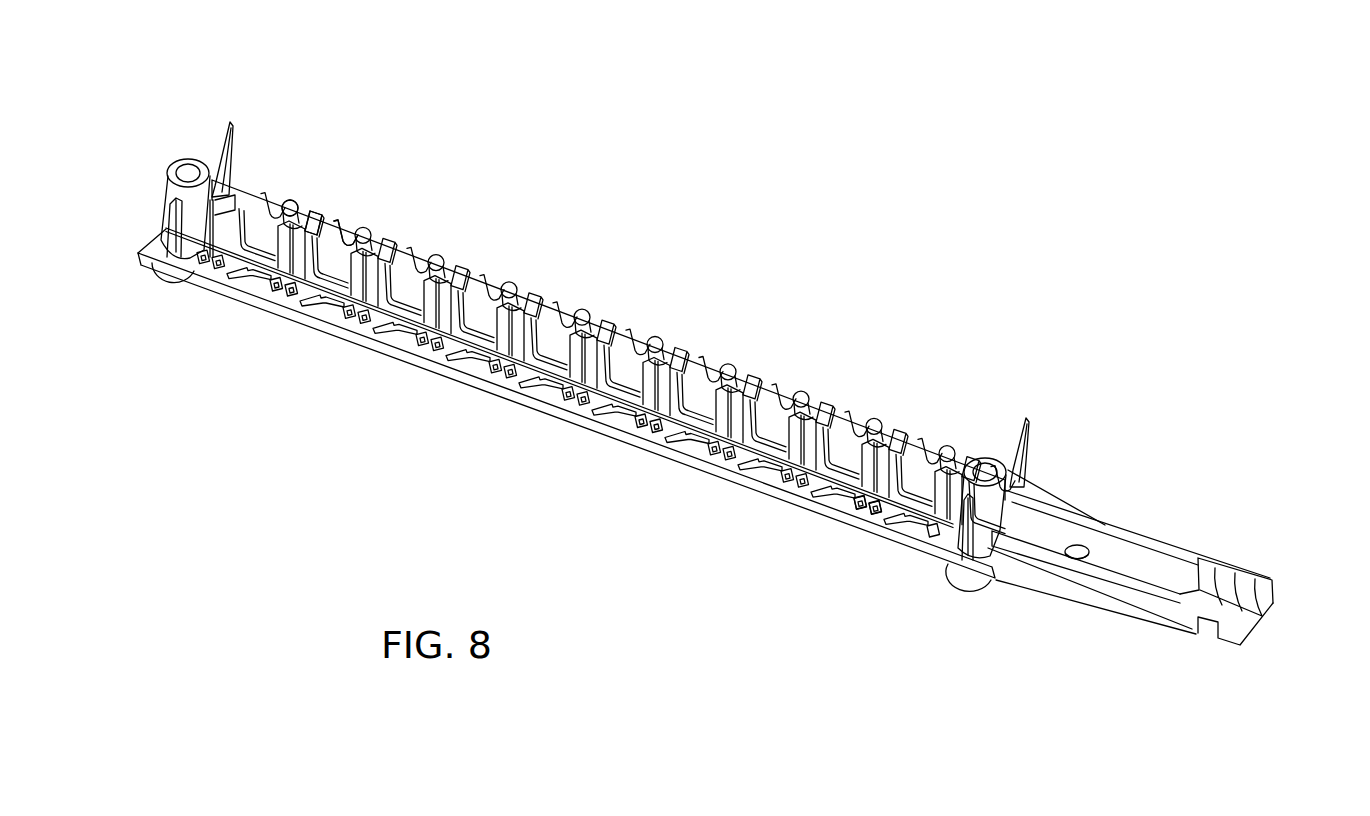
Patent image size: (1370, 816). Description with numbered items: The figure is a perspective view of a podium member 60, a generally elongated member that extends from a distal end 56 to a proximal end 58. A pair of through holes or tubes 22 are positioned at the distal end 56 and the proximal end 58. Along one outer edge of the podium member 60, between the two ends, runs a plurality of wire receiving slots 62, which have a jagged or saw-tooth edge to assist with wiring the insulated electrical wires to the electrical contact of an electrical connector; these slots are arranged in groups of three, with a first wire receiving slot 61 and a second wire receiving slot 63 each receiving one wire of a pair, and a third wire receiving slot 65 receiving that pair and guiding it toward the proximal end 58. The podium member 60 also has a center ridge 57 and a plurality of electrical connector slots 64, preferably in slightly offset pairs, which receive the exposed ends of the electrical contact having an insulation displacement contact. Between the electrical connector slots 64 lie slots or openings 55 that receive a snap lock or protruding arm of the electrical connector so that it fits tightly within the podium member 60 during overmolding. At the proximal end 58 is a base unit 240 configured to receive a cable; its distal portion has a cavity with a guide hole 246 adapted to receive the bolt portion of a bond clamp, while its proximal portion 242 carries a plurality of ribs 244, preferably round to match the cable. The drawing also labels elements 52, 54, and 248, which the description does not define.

The through holes or tubes 22 is at (188, 170).
The contact terminal 52 is at (405, 272).
The base 54 is at (400, 376).
The slots or openings 55 is at (852, 523).
The distal end 56 is at (148, 310).
The center ridge 57 is at (610, 328).
The proximal end 58 is at (1138, 637).
The podium member 60 is at (1072, 416).
The first wire receiving slot 61 is at (288, 200).
The wire receiving slots 62 is at (382, 115).
The second wire receiving slot 63 is at (316, 214).
The electrical connector slots 64 is at (885, 522).
The third wire receiving slot 65 is at (340, 222).
The base unit 240 is at (1108, 557).
The proximal portion 242 is at (1237, 580).
The ribs 244 is at (1262, 618).
The guide hole 246 is at (1073, 560).
The end wall 248 is at (1274, 588).